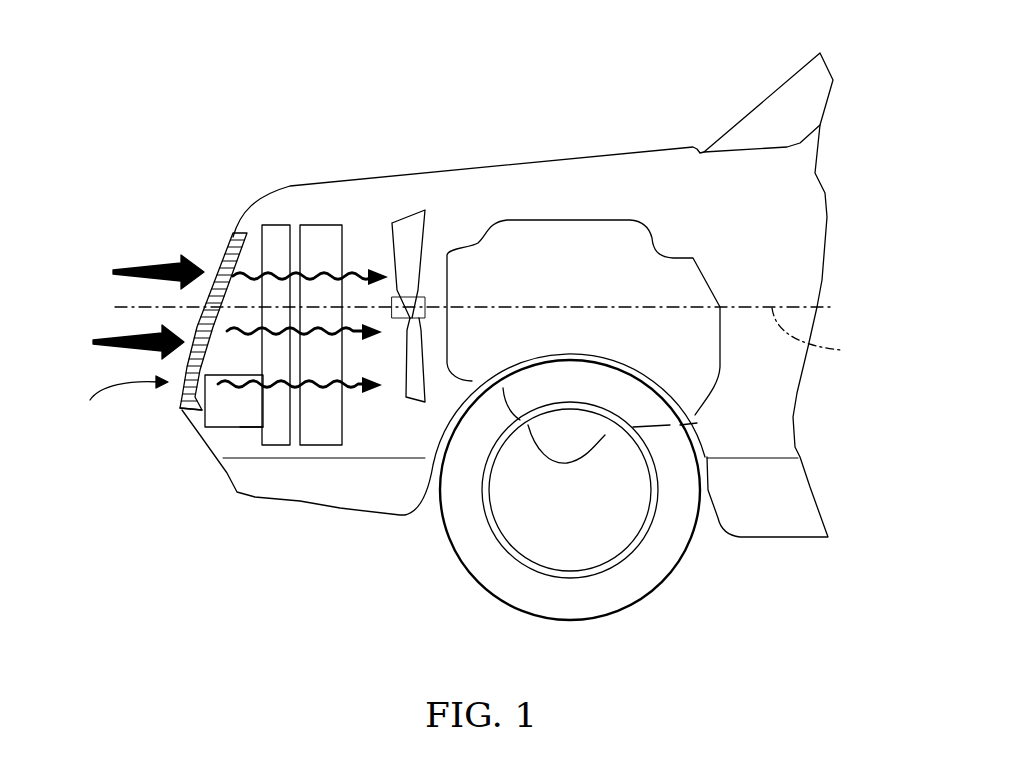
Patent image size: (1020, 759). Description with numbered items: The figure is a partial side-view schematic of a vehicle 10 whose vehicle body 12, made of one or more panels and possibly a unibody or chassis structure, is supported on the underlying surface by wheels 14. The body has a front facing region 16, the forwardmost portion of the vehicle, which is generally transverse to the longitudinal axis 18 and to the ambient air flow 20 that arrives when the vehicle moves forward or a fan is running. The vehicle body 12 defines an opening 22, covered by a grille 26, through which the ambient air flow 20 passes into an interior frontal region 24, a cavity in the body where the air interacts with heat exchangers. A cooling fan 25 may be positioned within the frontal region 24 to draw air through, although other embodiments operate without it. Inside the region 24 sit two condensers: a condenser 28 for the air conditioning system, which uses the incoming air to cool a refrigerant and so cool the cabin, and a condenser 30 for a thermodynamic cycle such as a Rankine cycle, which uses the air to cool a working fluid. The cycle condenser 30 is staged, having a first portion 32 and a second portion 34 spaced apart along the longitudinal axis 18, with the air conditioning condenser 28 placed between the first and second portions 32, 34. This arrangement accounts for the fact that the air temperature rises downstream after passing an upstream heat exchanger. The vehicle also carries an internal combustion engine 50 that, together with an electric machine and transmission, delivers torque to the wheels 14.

The vehicle 10 is at (114, 159).
The vehicle body 12 is at (392, 175).
The wheels 14 is at (673, 558).
The front facing region 16 is at (123, 406).
The longitudinal axis 18 is at (820, 337).
The ambient air flow 20 is at (140, 265).
The opening 22 is at (183, 408).
The interior frontal region 24 is at (299, 365).
The cooling fan 25 is at (415, 212).
The grille 26 is at (225, 258).
The condenser 28 is at (280, 445).
The condenser 30 is at (233, 427).
The first portion 32 is at (320, 445).
The second portion 34 is at (248, 427).
The internal combustion engine 50 is at (580, 220).